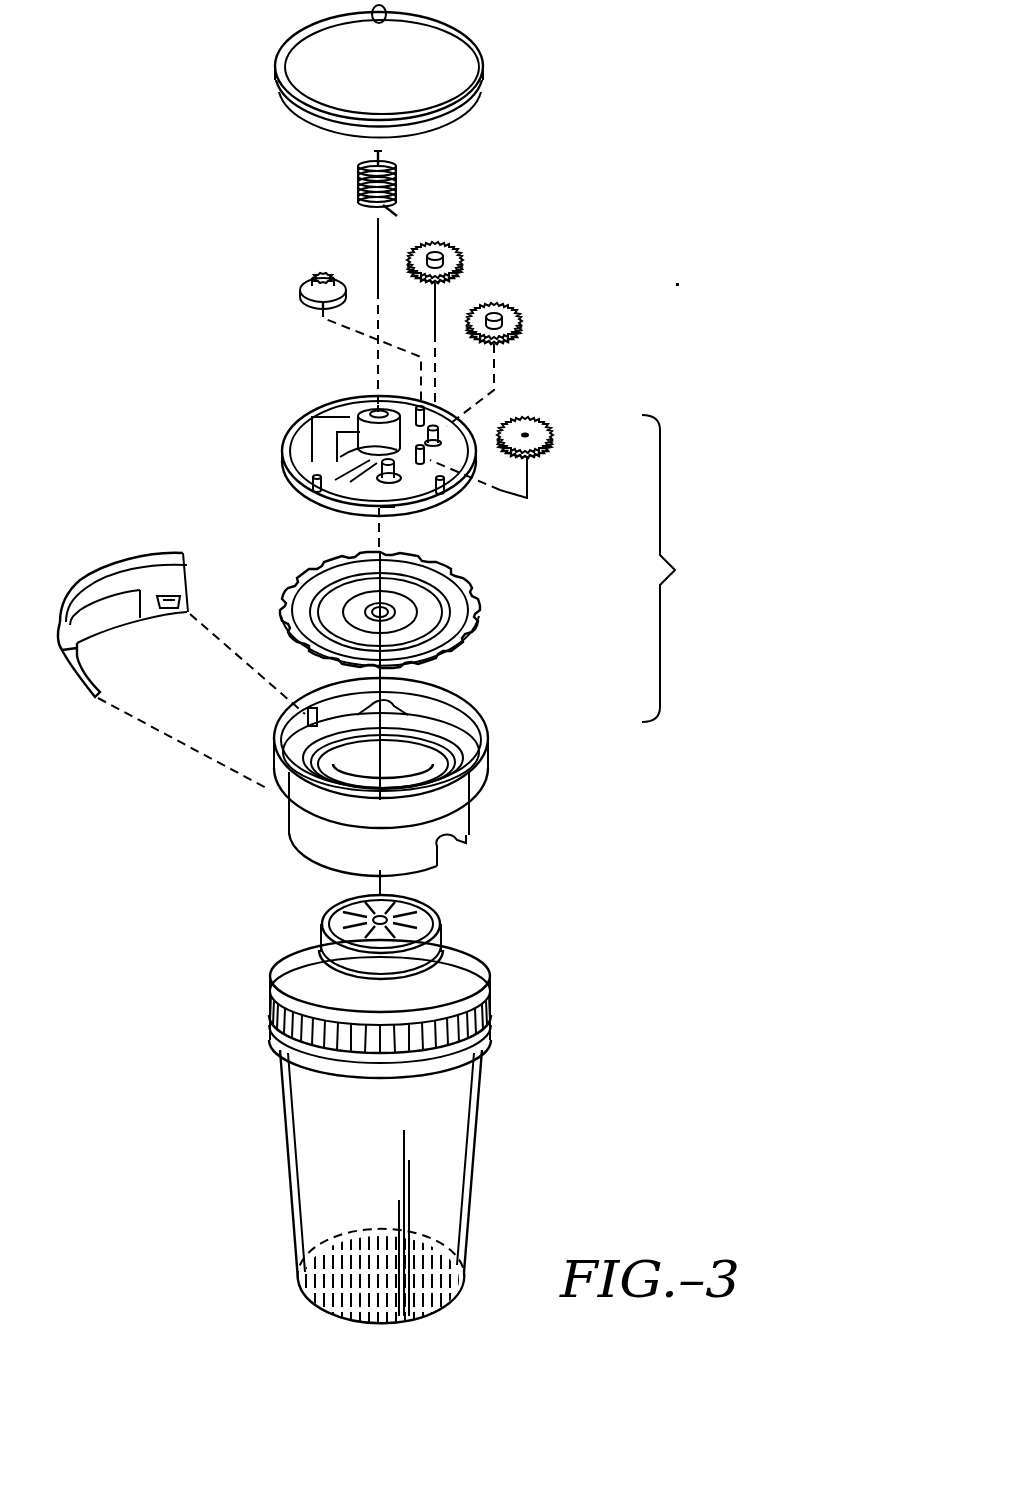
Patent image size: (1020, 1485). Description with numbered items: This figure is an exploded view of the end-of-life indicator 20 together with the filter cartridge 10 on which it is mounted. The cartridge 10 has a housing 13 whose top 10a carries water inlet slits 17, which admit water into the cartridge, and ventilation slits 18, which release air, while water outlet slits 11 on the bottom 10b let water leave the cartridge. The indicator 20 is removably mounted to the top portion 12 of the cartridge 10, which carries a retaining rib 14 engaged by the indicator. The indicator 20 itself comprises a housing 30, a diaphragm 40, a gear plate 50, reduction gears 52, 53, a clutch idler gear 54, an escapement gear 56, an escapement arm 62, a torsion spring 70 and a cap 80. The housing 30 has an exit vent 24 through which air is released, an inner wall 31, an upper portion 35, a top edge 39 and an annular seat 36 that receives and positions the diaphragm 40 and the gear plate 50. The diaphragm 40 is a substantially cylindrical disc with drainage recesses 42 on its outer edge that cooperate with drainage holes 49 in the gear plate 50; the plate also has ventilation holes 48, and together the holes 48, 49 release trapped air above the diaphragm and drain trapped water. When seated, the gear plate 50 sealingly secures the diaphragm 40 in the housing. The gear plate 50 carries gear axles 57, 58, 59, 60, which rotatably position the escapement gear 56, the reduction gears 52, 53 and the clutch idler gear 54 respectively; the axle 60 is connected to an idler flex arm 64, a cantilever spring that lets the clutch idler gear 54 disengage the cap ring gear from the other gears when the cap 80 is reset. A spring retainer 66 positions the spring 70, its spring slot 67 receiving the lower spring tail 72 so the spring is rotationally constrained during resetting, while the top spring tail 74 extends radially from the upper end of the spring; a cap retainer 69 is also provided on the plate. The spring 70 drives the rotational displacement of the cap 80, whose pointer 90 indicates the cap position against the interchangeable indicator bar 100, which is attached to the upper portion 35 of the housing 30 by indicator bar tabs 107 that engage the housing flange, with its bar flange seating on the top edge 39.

The filter cartridge 10 is at (367, 1098).
The top of the cartridge 10a is at (351, 925).
The bottom of the cartridge 10b is at (363, 1277).
The water outlet slits 11 is at (440, 1268).
The top portion of the filter cartridge 12 is at (430, 977).
The housing 13 is at (312, 1220).
The retaining rib 14 is at (323, 943).
The water inlet slits 17 is at (455, 1020).
The ventilation slits 18 is at (408, 912).
The indicator 20 is at (676, 568).
The exit vent 24 is at (462, 840).
The indicator housing 30 is at (396, 774).
The inner wall of the housing 31 is at (445, 705).
The upper portion of the housing 35 is at (315, 805).
The annular seat 36 is at (465, 738).
The top edge of the housing 39 is at (488, 745).
The diaphragm 40 is at (401, 609).
The drainage recesses 42 is at (313, 566).
The ventilation holes 48 is at (308, 490).
The drainage holes 49 is at (458, 490).
The gear plate 50 is at (391, 427).
The reduction gear 52 is at (455, 245).
The reduction gear 53 is at (510, 312).
The clutch idler gear 54 is at (548, 425).
The escapement gear 56 is at (310, 272).
The gear axle 57 is at (425, 410).
The gear axle 58 is at (440, 434).
The gear axle 59 is at (453, 457).
The gear axle 60 is at (389, 483).
The escapement arm 62 is at (345, 422).
The idler flex arm 64 is at (312, 448).
The spring retainer 66 is at (350, 414).
The spring slot 67 is at (441, 494).
The cap retainer 69 is at (386, 406).
The torsion spring 70 is at (382, 179).
The bottom spring tail 72 is at (398, 212).
The top spring tail 74 is at (385, 155).
The cap 80 is at (452, 50).
The pointer 90 is at (372, 17).
The indicator bar 100 is at (181, 652).
The indicator bar tabs 107 is at (168, 608).